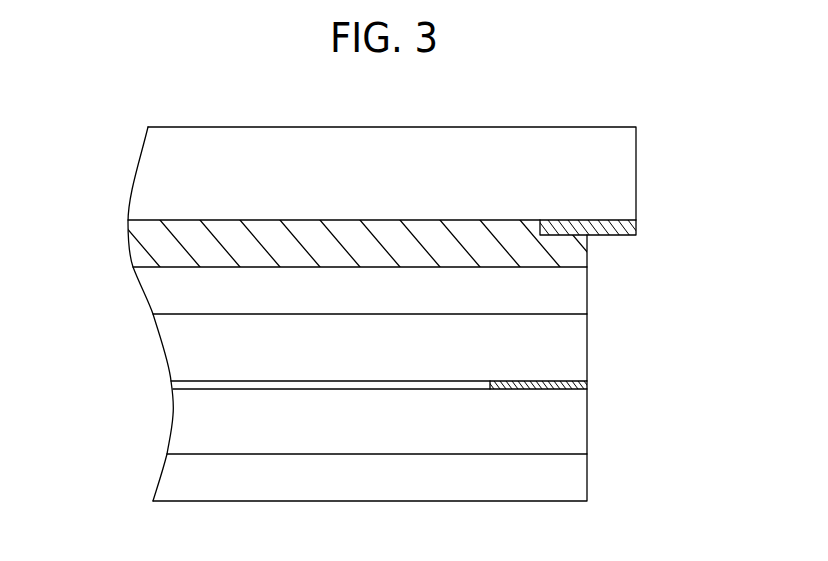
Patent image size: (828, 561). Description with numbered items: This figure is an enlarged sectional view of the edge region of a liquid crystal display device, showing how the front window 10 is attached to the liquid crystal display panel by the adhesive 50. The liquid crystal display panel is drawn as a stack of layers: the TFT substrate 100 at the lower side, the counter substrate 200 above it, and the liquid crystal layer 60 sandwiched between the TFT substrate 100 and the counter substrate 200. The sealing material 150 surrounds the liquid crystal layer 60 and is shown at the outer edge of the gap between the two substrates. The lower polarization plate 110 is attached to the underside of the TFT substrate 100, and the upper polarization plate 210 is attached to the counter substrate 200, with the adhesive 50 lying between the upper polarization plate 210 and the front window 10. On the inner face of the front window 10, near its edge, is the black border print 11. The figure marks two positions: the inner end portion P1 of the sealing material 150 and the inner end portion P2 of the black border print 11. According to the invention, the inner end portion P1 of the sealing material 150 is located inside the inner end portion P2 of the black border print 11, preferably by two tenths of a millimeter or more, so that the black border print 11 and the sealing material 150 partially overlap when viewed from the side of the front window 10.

The front window 10 is at (626, 180).
The black border print 11 is at (612, 236).
The adhesive 50 is at (160, 246).
The liquid crystal layer 60 is at (250, 383).
The upper polarization plate 210 is at (577, 297).
The counter substrate 200 is at (577, 356).
The sealing material 150 is at (553, 391).
The TFT substrate 100 is at (577, 438).
The lower polarization plate 110 is at (577, 482).
The inner end portion of the sealing material P1 is at (495, 406).
The inner end portion of the black border print P2 is at (545, 208).